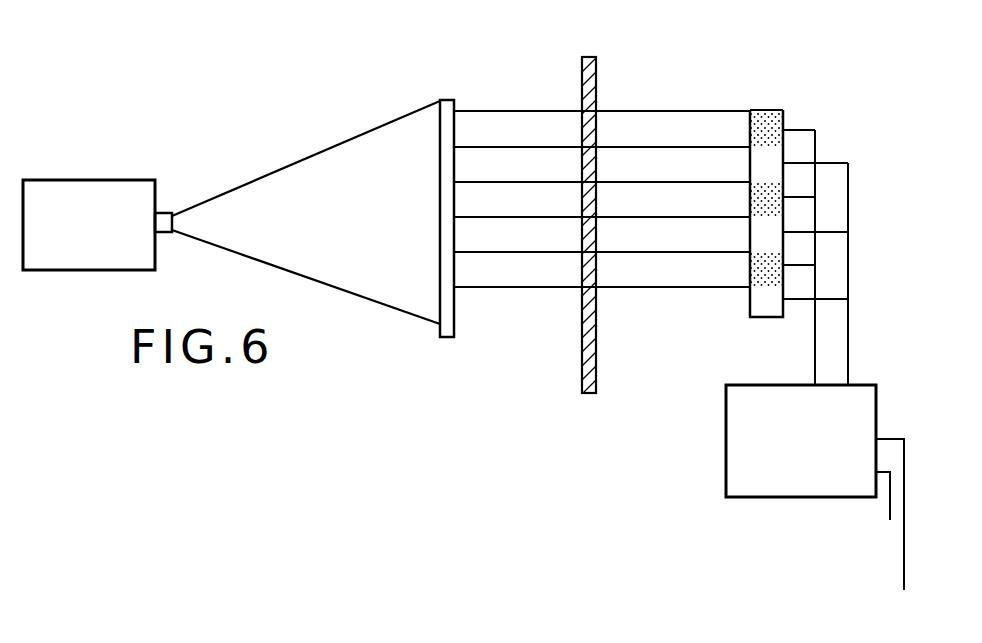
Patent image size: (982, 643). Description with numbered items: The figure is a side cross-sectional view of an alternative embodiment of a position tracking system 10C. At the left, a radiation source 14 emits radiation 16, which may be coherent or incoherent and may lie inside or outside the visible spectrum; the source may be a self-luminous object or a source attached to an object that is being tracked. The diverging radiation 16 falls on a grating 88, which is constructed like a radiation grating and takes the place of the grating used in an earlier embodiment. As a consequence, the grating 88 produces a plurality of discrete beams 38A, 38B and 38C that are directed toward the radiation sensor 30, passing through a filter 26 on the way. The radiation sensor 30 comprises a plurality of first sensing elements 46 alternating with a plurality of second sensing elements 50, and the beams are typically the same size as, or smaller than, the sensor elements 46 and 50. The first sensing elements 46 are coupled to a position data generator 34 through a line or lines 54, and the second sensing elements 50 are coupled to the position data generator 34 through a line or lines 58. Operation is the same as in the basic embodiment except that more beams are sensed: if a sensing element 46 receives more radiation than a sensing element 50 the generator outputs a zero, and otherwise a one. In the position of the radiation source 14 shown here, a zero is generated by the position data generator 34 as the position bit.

The radiation source 14 is at (78, 180).
The radiation 16 is at (272, 178).
The grating 88 is at (440, 105).
The discrete beam 38A is at (505, 118).
The discrete beam 38B is at (617, 192).
The discrete beam 38C is at (510, 276).
The filter 26 is at (597, 62).
The position tracking system 10C is at (541, 357).
The radiation sensor 30 is at (785, 110).
The first sensing elements 46 is at (763, 112).
The second sensing elements 50 is at (785, 158).
The line 54 is at (815, 353).
The line 58 is at (850, 338).
The position data generator 34 is at (726, 423).